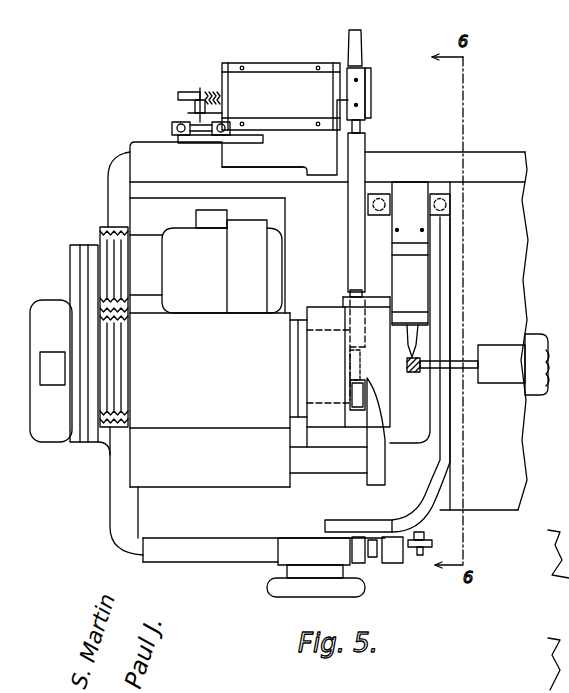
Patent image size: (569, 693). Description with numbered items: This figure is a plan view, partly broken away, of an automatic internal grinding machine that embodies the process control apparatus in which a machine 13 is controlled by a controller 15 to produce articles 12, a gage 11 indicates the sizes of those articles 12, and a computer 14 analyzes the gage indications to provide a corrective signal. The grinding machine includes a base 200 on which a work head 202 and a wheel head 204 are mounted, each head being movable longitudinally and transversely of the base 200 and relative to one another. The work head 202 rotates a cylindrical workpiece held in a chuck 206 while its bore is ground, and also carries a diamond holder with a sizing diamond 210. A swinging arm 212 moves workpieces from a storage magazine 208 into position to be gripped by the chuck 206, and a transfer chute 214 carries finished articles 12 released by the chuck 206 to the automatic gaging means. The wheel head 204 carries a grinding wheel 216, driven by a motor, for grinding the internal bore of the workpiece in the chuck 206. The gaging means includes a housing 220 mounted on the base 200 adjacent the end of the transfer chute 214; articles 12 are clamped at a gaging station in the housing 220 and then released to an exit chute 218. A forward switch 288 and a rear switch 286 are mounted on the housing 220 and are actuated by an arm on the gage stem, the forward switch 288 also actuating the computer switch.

The gage 11 is at (303, 61).
The articles 12 is at (350, 355).
The machine 13 is at (110, 512).
The computer 14 is at (128, 152).
The controller 15 is at (429, 268).
The base 200 is at (482, 183).
The work head 202 is at (168, 413).
The wheel head 204 is at (528, 338).
The chuck 206 is at (390, 398).
The storage magazine 208 is at (352, 392).
The sizing diamond 210 is at (418, 355).
The swinging arm 212 is at (378, 478).
The transfer chute 214 is at (348, 238).
The grinding wheel 216 is at (424, 360).
The exit chute 218 is at (362, 48).
The housing 220 is at (243, 63).
The rear switch 286 is at (176, 127).
The forward switch 288 is at (228, 124).